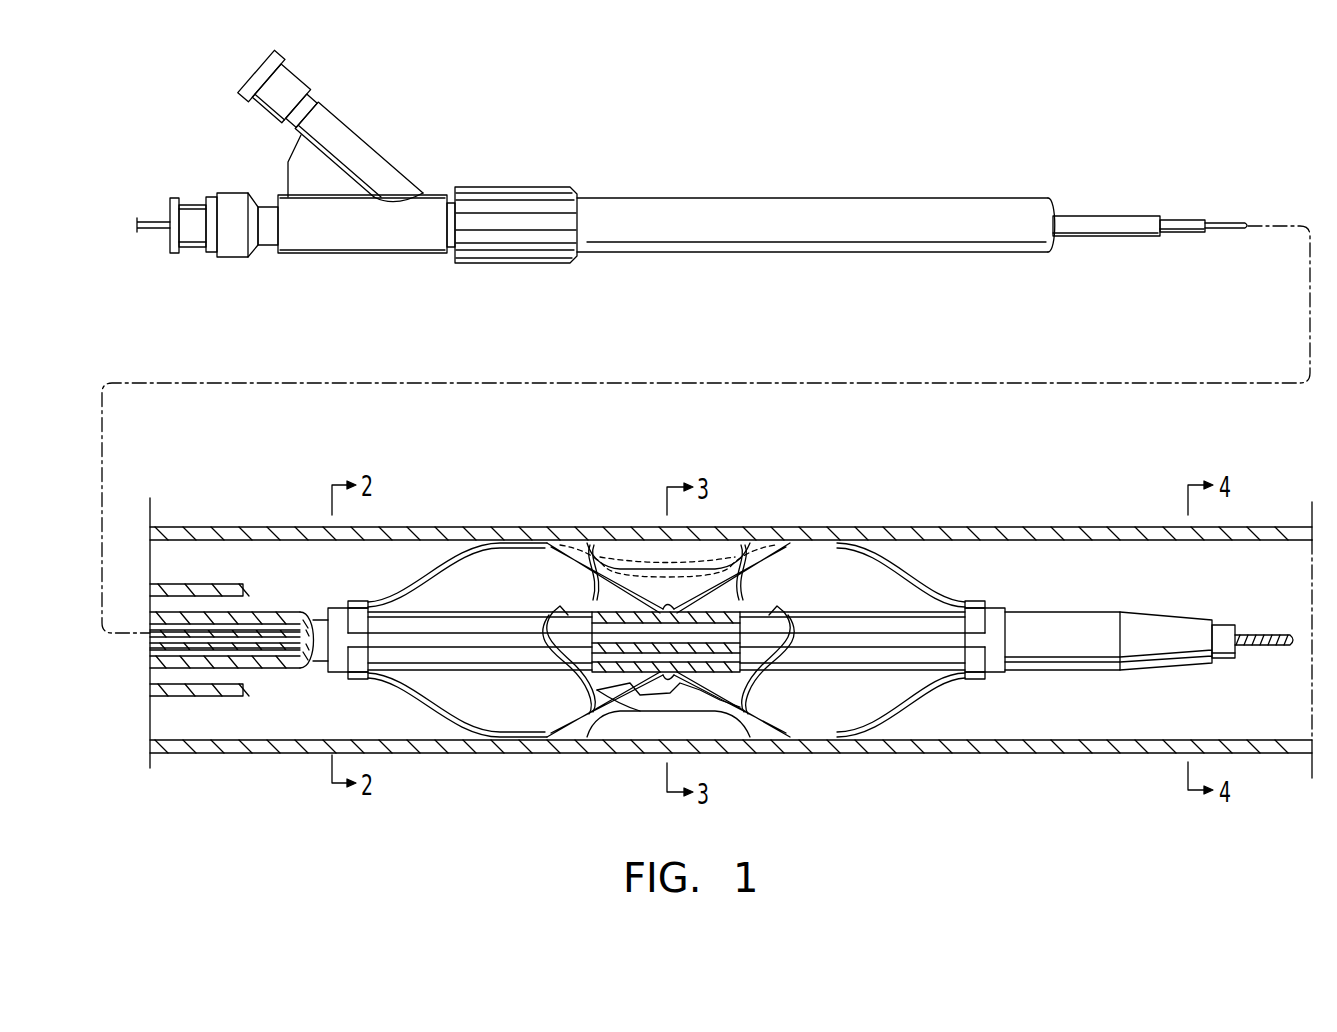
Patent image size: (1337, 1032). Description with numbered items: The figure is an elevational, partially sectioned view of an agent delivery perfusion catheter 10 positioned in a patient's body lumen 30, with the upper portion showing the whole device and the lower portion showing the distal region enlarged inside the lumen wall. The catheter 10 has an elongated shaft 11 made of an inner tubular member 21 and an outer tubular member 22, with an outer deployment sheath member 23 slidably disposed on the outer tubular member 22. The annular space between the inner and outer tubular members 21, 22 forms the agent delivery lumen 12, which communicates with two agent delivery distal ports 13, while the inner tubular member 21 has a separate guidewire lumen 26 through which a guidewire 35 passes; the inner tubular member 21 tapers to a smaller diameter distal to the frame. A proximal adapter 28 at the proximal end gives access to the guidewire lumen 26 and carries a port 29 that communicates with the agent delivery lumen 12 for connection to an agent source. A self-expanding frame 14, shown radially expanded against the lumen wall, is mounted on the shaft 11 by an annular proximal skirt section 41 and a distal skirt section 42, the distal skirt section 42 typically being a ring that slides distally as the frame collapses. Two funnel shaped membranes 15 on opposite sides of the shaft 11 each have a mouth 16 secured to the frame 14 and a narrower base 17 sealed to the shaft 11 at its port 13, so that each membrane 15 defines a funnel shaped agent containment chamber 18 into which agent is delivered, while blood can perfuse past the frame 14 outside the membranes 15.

The agent delivery perfusion catheter 10 is at (797, 168).
The elongated shaft 11 is at (1081, 178).
The agent delivery lumen 12 is at (233, 619).
The agent delivery distal port 13 is at (743, 595).
The frame 14 is at (927, 588).
The funnel shaped membrane 15 is at (807, 537).
The mouth 16 is at (630, 550).
The base 17 is at (593, 600).
The agent containment chamber 18 is at (667, 580).
The inner tubular member 21 is at (1180, 220).
The outer tubular member 22 is at (1117, 217).
The outer deployment sheath member 23 is at (687, 198).
The guidewire lumen 26 is at (287, 629).
The proximal adapter 28 is at (318, 253).
The port 29 is at (340, 115).
The body lumen 30 is at (1163, 718).
The guidewire 35 is at (152, 222).
The proximal skirt section 41 is at (333, 669).
The distal skirt section 42 is at (988, 675).